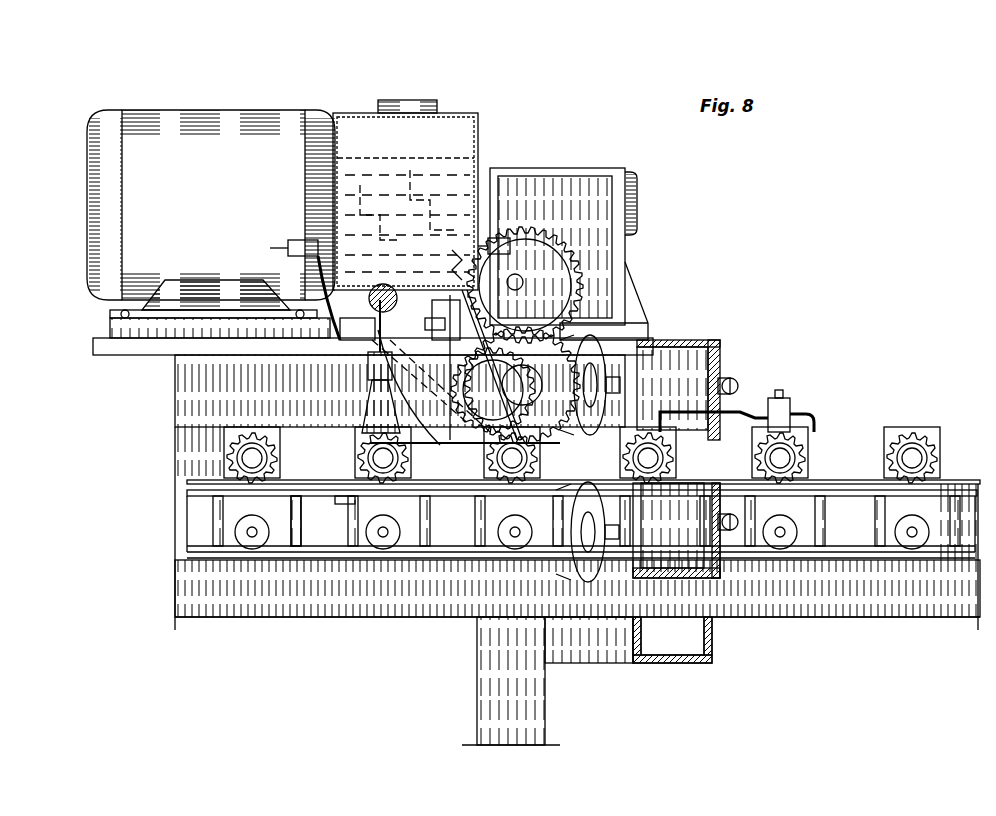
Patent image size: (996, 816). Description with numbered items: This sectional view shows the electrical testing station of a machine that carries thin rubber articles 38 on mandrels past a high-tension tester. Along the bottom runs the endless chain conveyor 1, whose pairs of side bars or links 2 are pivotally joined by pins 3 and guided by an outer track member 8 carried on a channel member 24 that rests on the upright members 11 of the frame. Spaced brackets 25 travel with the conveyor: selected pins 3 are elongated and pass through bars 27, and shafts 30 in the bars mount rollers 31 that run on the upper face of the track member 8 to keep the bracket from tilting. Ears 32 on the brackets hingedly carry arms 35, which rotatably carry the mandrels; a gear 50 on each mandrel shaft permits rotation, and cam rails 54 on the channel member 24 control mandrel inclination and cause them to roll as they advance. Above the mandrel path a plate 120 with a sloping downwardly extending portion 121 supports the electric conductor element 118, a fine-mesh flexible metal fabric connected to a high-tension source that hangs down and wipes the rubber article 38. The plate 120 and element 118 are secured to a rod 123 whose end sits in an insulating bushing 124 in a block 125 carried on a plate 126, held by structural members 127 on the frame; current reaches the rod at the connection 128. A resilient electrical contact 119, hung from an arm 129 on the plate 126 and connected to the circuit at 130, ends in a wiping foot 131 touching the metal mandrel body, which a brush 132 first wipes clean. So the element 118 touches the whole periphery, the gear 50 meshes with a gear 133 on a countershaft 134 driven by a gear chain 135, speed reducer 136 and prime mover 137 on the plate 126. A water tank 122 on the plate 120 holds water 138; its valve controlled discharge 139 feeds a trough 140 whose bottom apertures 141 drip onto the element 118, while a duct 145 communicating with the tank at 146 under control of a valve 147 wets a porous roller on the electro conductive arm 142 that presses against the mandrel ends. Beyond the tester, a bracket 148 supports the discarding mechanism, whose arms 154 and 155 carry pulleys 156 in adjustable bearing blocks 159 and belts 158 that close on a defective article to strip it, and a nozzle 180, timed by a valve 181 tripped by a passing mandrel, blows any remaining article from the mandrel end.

The prime mover 137 is at (112, 128).
The plate 126 is at (93, 350).
The structural members 127 is at (175, 447).
The water tank 122 is at (465, 113).
The water 138 is at (385, 165).
The valve 147 is at (305, 242).
The duct connection 146 is at (300, 282).
The speed reducer 136 is at (620, 168).
The gear chain 135 is at (570, 323).
The arm 142 is at (548, 280).
The trough 140 is at (518, 275).
The valve controlled discharge 139 is at (499, 238).
The apertures 141 is at (445, 266).
The gear 133 is at (530, 350).
The downwardly extending portion 121 is at (493, 390).
The electric conductor element 118 is at (493, 390).
The countershaft 134 is at (512, 350).
The conductor connection 130 is at (451, 320).
The conductor connection 128 is at (450, 295).
The plate 120 is at (432, 318).
The rod 123 is at (378, 290).
The block 125 is at (350, 325).
The brush 132 is at (368, 395).
The duct 145 is at (333, 340).
The insulating bushing 124 is at (418, 384).
The arm 129 is at (409, 387).
The electrical contact 119 is at (462, 447).
The arms 35 is at (228, 440).
The rubber articles 38 is at (248, 440).
The gear 50 is at (238, 458).
The wiping foot 131 is at (536, 450).
The cam rails 54 is at (322, 480).
The ears 32 is at (215, 494).
The brackets 25 is at (200, 519).
The rollers 31 is at (238, 530).
The shafts 30 is at (250, 548).
The bars 27 is at (272, 546).
The pin 3 is at (300, 528).
The side bars or links 2 is at (325, 548).
The endless conveyor 1 is at (335, 556).
The track member 8 is at (190, 565).
The channel member 24 is at (262, 605).
The upright members 11 is at (490, 682).
The bracket 148 is at (690, 665).
The arm 155 is at (718, 578).
The belts 158 is at (607, 350).
The pulleys 156 is at (706, 335).
The arm 154 is at (706, 343).
The bearing blocks 159 is at (714, 336).
The nozzle 180 is at (668, 430).
The valve 181 is at (790, 405).